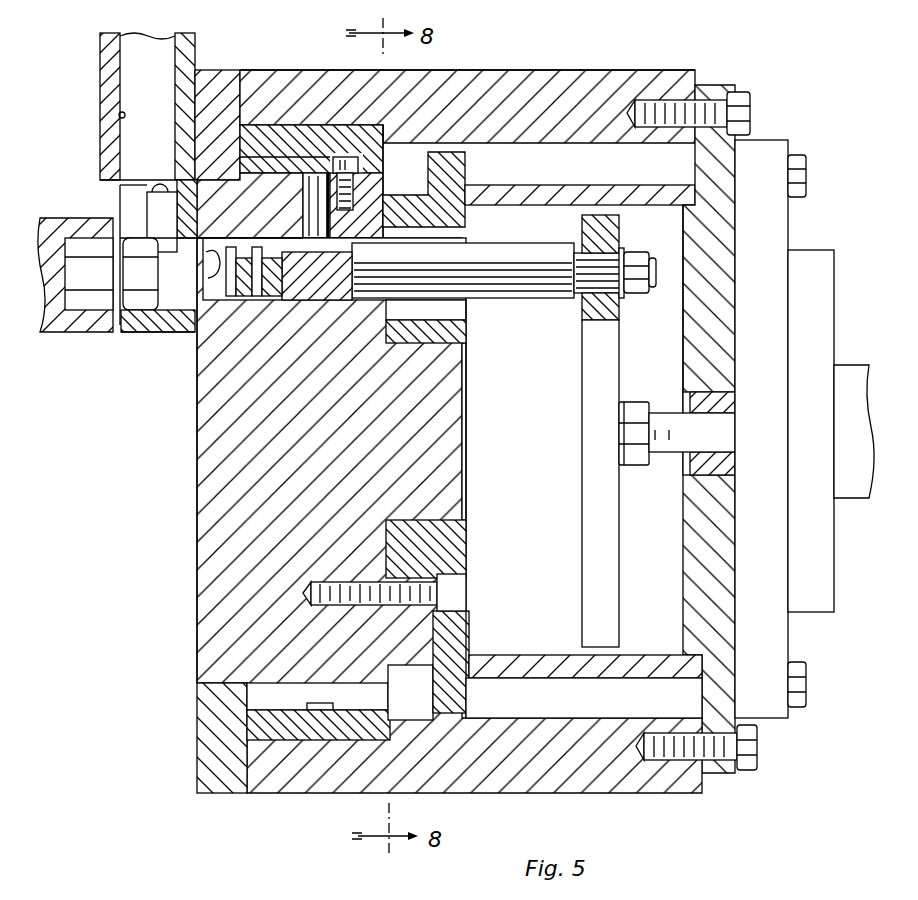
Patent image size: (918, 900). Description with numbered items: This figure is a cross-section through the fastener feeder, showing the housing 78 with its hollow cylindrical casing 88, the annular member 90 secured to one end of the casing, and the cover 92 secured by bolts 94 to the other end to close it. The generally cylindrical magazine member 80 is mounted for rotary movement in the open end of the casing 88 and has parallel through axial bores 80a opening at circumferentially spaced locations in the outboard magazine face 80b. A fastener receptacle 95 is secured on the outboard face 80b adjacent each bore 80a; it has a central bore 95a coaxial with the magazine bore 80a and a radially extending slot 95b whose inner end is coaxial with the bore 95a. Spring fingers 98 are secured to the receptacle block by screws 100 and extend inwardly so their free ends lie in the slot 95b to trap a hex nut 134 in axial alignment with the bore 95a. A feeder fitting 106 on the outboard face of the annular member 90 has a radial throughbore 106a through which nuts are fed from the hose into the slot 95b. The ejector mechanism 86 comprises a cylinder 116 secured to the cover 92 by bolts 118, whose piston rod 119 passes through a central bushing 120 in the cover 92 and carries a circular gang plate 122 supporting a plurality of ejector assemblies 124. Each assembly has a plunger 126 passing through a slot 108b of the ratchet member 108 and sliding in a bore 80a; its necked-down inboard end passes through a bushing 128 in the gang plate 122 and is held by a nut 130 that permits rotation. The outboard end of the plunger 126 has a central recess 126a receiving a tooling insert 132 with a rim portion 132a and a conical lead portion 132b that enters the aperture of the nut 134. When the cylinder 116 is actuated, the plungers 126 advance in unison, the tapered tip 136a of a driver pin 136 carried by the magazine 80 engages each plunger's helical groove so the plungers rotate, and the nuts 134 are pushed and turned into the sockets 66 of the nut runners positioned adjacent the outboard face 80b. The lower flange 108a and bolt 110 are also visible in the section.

The socket 66 is at (50, 218).
The housing 78 is at (545, 66).
The magazine member 80 is at (216, 542).
The axial bore 80a is at (198, 348).
The outboard magazine face 80b is at (197, 455).
The ejector mechanism 86 is at (624, 369).
The casing 88 is at (318, 68).
The annular member 90 is at (220, 68).
The cover 92 is at (712, 85).
The bolts 94 is at (752, 110).
The fastener receptacle 95 is at (146, 336).
The central bore 95a is at (194, 314).
The radially extending slot 95b is at (130, 195).
The spring fingers 98 is at (155, 218).
The screws 100 is at (158, 185).
The feeder fitting 106 is at (100, 70).
The throughbore 106a is at (119, 114).
The ratchet member 108 is at (469, 556).
The lower sleeve flange 108a is at (470, 716).
The slot 108b is at (466, 310).
The retaining bolt 110 is at (465, 598).
The cylinder 116 is at (850, 368).
The bolts 118 is at (800, 181).
The piston rod 119 is at (681, 450).
The central bushing 120 is at (728, 406).
The gang plate 122 is at (584, 401).
The ejector assembly 124 is at (490, 241).
The plunger 126 is at (546, 276).
The central recess 126a is at (278, 303).
The bushing 128 is at (600, 251).
The nut 130 is at (640, 291).
The tooling insert 132 is at (210, 258).
The rim portion 132a is at (237, 300).
The conical lead portion 132b is at (232, 292).
The hex nut 134 is at (119, 333).
The driver pin 136 is at (362, 218).
The tapered tip 136a is at (345, 252).